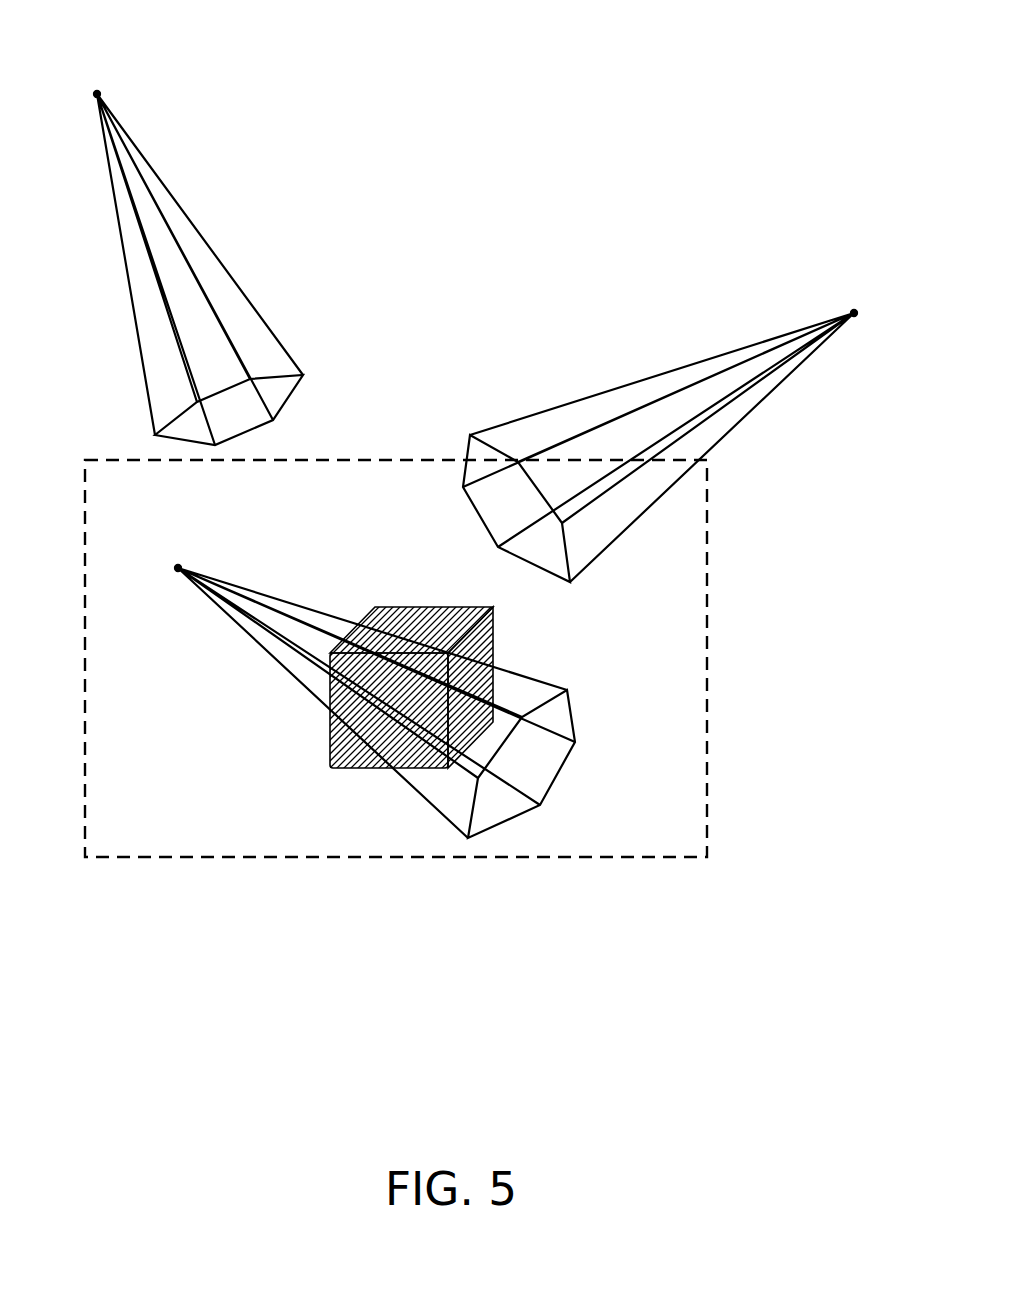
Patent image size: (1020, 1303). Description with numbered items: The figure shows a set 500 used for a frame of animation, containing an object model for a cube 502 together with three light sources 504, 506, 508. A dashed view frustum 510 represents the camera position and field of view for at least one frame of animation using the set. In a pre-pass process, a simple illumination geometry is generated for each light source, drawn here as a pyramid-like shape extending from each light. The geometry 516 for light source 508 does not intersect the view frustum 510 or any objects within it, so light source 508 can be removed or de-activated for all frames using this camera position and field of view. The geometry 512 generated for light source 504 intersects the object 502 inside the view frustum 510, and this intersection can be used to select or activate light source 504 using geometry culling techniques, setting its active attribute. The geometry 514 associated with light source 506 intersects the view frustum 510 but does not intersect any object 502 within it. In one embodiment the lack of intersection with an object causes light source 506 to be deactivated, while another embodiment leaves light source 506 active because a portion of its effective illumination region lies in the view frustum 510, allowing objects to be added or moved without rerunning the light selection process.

The set 500 is at (685, 155).
The cube 502 is at (485, 642).
The light source 504 is at (178, 568).
The light source 506 is at (854, 313).
The light source 508 is at (97, 95).
The view frustum 510 is at (707, 697).
The geometry 512 is at (290, 658).
The geometry 514 is at (622, 400).
The geometry 516 is at (218, 284).